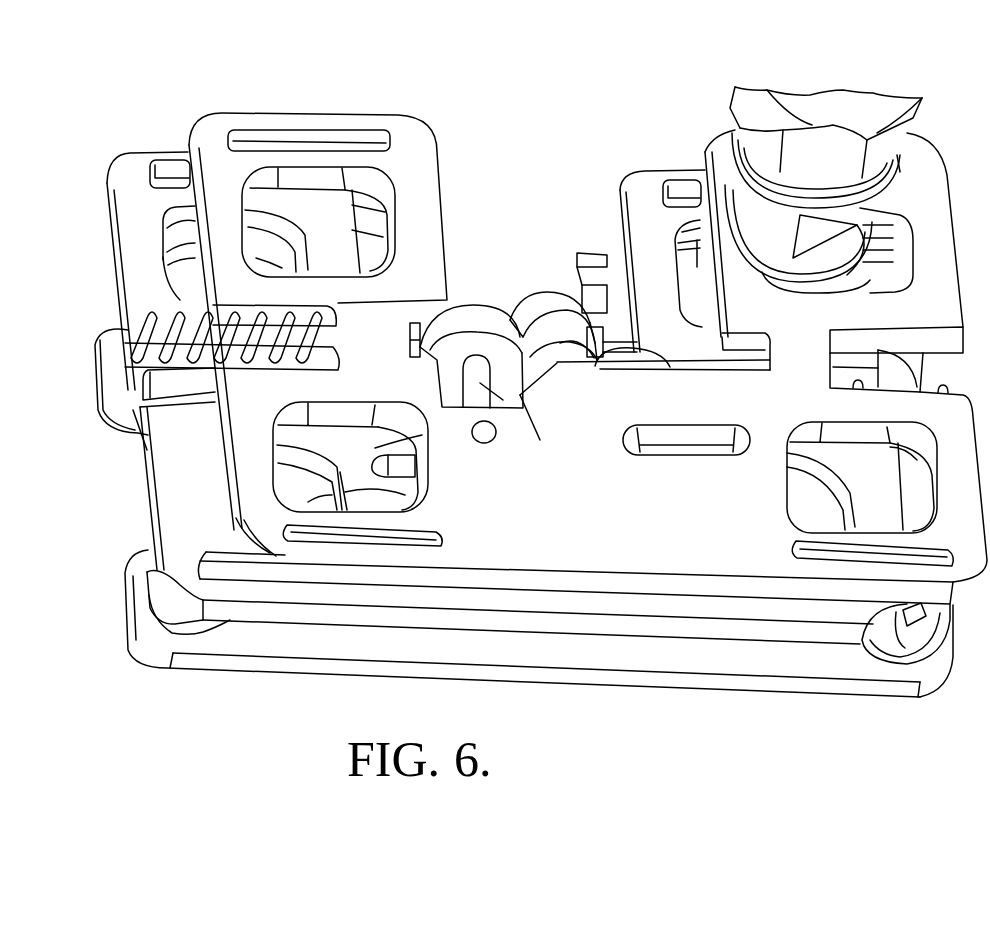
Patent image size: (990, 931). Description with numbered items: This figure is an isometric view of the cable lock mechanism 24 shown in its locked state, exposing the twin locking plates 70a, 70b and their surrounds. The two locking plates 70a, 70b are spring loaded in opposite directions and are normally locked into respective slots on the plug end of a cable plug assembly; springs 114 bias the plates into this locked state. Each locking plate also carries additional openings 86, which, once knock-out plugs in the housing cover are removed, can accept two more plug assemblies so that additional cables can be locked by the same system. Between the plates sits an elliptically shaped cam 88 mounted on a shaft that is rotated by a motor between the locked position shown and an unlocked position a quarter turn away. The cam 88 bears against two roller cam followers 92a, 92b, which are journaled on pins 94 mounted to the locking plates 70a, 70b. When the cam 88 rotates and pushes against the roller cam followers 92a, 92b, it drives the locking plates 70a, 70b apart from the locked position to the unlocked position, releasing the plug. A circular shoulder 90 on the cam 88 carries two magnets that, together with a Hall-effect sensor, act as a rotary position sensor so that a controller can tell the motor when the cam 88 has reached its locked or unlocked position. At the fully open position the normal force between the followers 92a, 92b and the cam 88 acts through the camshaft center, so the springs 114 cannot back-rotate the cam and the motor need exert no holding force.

The mechanism 24 is at (536, 56).
The locking plate 70a is at (403, 315).
The locking plate 70b is at (695, 352).
The additional openings 86 is at (328, 203).
The elliptically shaped cam 88 is at (570, 352).
The circular shoulder 90 is at (542, 300).
The roller cam follower 92a is at (483, 320).
The roller cam follower 92b is at (633, 362).
The pins 94 is at (480, 383).
The springs 114 is at (118, 303).